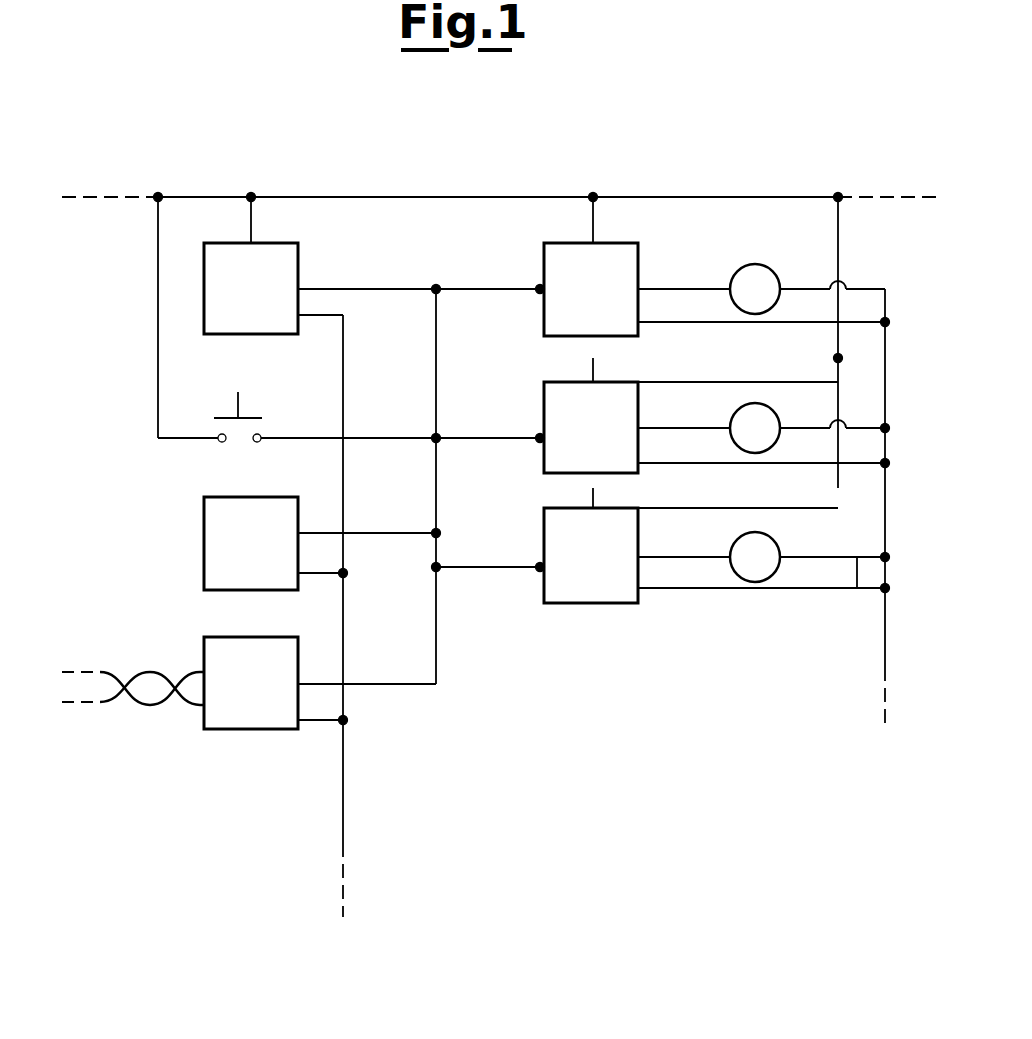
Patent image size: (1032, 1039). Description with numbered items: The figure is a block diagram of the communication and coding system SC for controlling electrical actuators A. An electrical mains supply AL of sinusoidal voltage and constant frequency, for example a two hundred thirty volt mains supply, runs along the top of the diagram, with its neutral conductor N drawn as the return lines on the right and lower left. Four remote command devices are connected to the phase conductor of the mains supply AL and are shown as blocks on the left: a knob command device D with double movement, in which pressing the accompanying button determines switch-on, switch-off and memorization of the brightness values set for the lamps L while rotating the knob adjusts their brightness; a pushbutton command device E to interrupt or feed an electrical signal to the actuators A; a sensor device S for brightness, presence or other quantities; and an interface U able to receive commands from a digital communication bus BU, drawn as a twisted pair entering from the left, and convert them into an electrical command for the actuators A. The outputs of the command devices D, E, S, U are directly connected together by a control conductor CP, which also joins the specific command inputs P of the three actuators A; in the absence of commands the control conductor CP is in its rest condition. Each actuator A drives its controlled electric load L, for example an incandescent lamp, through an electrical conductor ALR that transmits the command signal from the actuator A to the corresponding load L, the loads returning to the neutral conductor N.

The communication and coding system SC is at (878, 178).
The electrical mains supply AL is at (700, 197).
The neutral conductor N is at (885, 348).
The control conductor CP is at (466, 287).
The knob command device D is at (285, 266).
The pushbutton command device E is at (257, 446).
The sensor device S is at (222, 518).
The interface U is at (278, 652).
The digital communication bus BU is at (168, 680).
The command input P is at (540, 288).
The electrical actuator A is at (626, 266).
The electrical conductor ALR is at (700, 289).
The controlled electric load L is at (760, 276).